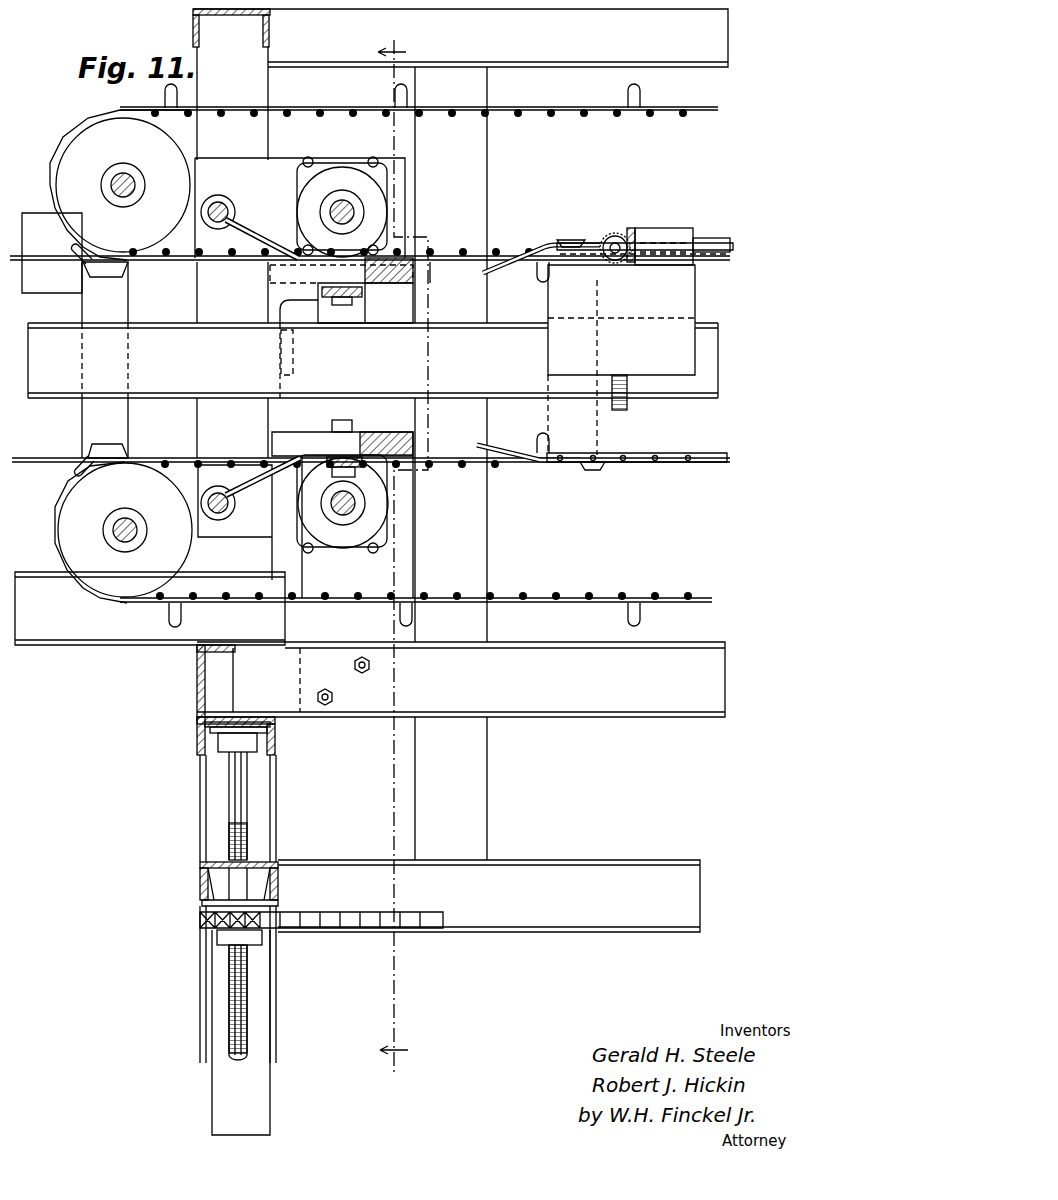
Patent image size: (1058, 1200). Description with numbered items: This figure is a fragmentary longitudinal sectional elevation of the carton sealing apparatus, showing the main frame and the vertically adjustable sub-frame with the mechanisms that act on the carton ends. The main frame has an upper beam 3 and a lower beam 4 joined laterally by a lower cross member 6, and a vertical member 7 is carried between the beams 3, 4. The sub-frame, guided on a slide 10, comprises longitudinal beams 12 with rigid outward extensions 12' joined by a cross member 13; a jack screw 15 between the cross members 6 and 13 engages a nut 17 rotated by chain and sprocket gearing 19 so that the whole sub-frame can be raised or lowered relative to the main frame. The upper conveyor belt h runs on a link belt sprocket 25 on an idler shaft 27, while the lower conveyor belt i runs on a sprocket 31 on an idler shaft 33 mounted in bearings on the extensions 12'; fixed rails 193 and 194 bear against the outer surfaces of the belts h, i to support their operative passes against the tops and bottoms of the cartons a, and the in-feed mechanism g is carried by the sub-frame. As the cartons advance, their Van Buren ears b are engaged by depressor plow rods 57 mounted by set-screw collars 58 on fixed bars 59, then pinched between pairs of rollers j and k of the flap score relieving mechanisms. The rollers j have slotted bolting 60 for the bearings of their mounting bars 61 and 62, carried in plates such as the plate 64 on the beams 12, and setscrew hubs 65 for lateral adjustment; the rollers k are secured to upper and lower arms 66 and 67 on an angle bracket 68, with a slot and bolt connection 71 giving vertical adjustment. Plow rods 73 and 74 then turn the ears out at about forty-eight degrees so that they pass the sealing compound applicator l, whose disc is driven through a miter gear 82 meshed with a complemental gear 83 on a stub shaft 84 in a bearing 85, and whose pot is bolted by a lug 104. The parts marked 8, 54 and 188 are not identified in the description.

The upper beam 3 is at (525, 70).
The lower beam 4 is at (508, 935).
The lower cross member 6 is at (200, 888).
The vertical member 7 is at (490, 778).
The lower post 8 is at (270, 1088).
The slide 10 is at (403, 563).
The longitudinal beam 12 is at (461, 667).
The outward extension 12' is at (150, 620).
The cross member 13 is at (197, 694).
The jack screw 15 is at (228, 805).
The nut 17 is at (222, 942).
The chain and sprocket gearing 19 is at (322, 930).
The link belt sprocket 25 is at (73, 143).
The idler shaft 27 is at (121, 182).
The sprocket 31 is at (68, 514).
The idler shaft 33 is at (130, 524).
The beam 54 is at (510, 326).
The depressor plow rod 57 is at (250, 238).
The set-screw affixed collar 58 is at (219, 197).
The fixedly mounted bar 59 is at (226, 210).
The slotted bolting 60 is at (304, 165).
The mounting bar 61 is at (330, 212).
The mounting bar 62 is at (339, 508).
The plate 64 is at (378, 577).
The setscrew secured hub 65 is at (358, 212).
The upper arm 66 is at (346, 306).
The lower arm 67 is at (355, 472).
The upper angle bracket 68 is at (289, 312).
The slot and bolt connection 71 is at (288, 356).
The plow rod 73 is at (494, 272).
The plow rod 74 is at (504, 455).
The driven miter gear 82 is at (614, 236).
The complemental gear 83 is at (631, 228).
The stub shaft 84 is at (706, 240).
The bearing 85 is at (672, 228).
The lug 104 is at (627, 405).
The plate 188 is at (35, 257).
The fixed rail 193 is at (536, 232).
The fixed rail 194 is at (600, 482).
The carton a is at (82, 418).
The Van Buren ear b is at (96, 275).
The in-feed mechanism g is at (24, 463).
The upper conveyor belt h is at (436, 265).
The lower conveyor belt i is at (247, 458).
The roller j is at (344, 168).
The roller k is at (380, 292).
The sealing compound applicator l is at (621, 360).